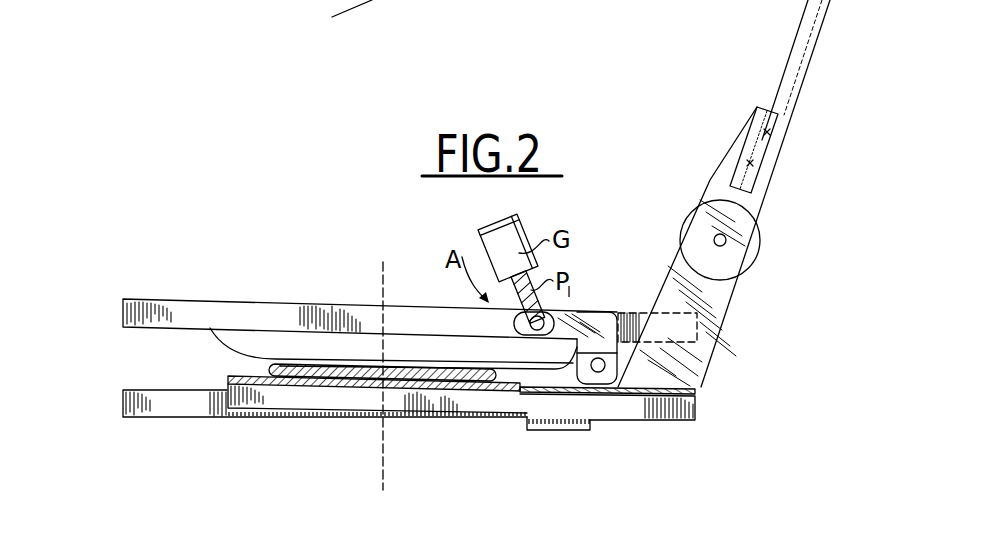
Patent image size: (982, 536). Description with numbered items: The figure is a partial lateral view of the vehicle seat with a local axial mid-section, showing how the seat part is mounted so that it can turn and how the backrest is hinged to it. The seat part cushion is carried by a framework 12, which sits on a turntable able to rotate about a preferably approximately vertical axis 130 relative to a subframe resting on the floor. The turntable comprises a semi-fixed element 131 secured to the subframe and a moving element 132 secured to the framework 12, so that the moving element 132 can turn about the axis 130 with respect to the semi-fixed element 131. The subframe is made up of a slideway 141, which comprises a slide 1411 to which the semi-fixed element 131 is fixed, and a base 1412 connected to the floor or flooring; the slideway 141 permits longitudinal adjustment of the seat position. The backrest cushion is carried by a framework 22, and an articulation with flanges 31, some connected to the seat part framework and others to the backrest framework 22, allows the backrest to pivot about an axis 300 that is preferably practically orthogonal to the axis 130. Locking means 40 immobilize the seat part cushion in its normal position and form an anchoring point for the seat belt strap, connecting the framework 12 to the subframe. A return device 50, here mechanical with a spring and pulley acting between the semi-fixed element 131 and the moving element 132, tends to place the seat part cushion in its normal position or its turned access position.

The framework 12 is at (157, 302).
The framework 22 is at (812, 56).
The flanges 31 is at (767, 172).
The locking means 40 is at (620, 305).
The return device 50 is at (521, 400).
The axis 130 is at (383, 266).
The semi-fixed element 131 is at (227, 377).
The moving element 132 is at (224, 337).
The slideway 141 is at (100, 430).
The axis 300 is at (727, 240).
The slide 1411 is at (697, 411).
The base 1412 is at (583, 429).